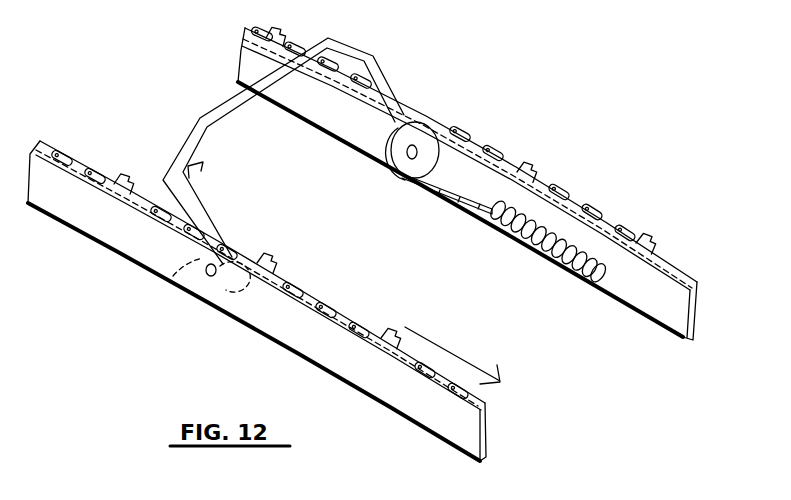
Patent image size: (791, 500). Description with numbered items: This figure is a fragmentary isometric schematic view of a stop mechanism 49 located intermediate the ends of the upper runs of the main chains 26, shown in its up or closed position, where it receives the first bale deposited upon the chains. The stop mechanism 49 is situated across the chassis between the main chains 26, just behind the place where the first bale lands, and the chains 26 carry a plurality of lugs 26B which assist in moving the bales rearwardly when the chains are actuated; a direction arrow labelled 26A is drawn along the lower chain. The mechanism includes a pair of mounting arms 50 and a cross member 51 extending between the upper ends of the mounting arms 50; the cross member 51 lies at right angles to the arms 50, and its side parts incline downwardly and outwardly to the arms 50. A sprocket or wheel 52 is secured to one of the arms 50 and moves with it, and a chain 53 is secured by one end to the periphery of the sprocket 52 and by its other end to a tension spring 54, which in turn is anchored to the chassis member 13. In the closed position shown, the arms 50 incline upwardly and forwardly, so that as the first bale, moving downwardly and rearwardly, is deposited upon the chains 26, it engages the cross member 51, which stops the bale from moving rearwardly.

The chassis member 13 is at (468, 423).
The main chains 26 is at (487, 153).
The rail section / direction arrow 26A is at (463, 339).
The lugs 26B is at (528, 167).
The stop mechanism 49 is at (204, 174).
The mounting arms 50 is at (392, 108).
The cross member 51 is at (182, 123).
The sprocket 52 is at (414, 163).
The chain 53 is at (458, 204).
The tension spring 54 is at (525, 242).